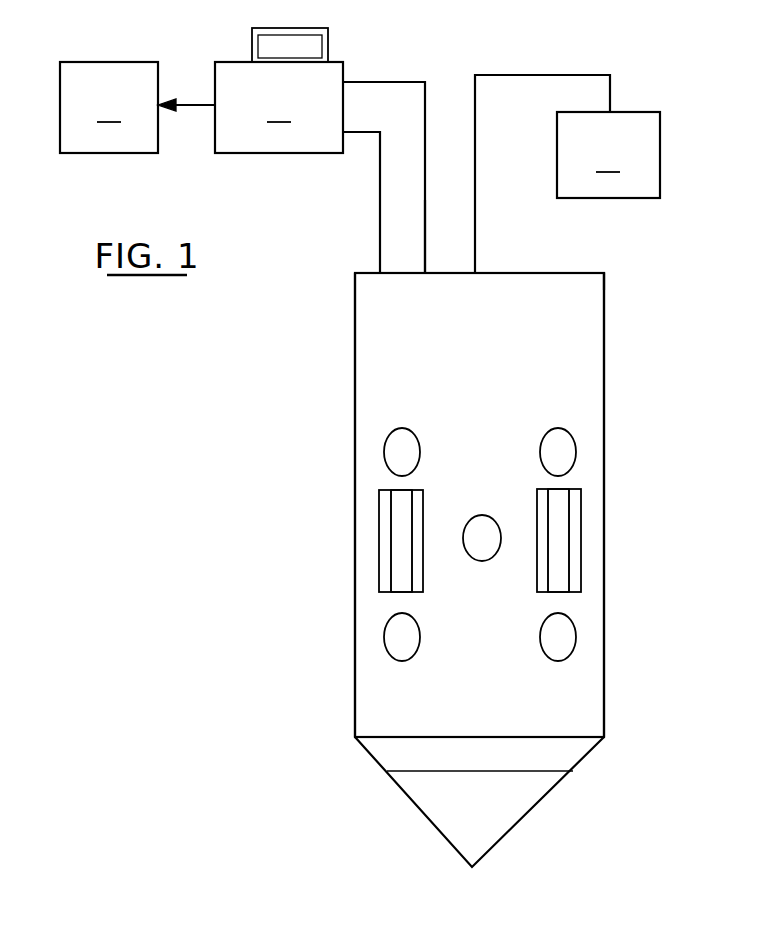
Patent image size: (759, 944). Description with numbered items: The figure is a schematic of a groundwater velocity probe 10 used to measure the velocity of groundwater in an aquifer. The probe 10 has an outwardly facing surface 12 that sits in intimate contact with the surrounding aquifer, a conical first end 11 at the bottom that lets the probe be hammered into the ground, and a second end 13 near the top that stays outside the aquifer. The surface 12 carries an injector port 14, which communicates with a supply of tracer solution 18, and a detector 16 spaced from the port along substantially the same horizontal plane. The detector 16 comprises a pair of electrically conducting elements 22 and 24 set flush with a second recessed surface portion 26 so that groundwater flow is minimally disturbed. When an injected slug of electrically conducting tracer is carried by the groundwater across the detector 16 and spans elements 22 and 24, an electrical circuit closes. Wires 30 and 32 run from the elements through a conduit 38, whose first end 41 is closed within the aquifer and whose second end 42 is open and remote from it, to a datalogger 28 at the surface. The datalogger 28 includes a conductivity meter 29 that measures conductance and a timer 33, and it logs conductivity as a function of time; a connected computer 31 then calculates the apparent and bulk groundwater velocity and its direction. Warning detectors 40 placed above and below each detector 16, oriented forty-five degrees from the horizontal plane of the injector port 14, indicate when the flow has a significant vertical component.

The groundwater velocity probe 10 is at (652, 318).
The first end 11 is at (487, 857).
The outwardly facing surface 12 is at (592, 427).
The second end 13 is at (362, 272).
The injector port 14 is at (480, 515).
The detector 16 is at (385, 557).
The supply of tracer solution 18 is at (567, 174).
The electrically conducting element 22 is at (390, 530).
The electrically conducting element 24 is at (412, 568).
The second recessed surface portion 26 is at (379, 507).
The datalogger 28 is at (355, 72).
The conductivity meter 29 is at (279, 107).
The wire 30 is at (380, 217).
The computer 31 is at (137, 107).
The wire 32 is at (425, 217).
The timer 33 is at (332, 44).
The conduit 38 is at (370, 367).
The warning detectors 40 is at (402, 428).
The first end 41 is at (608, 740).
The second end 42 is at (605, 272).